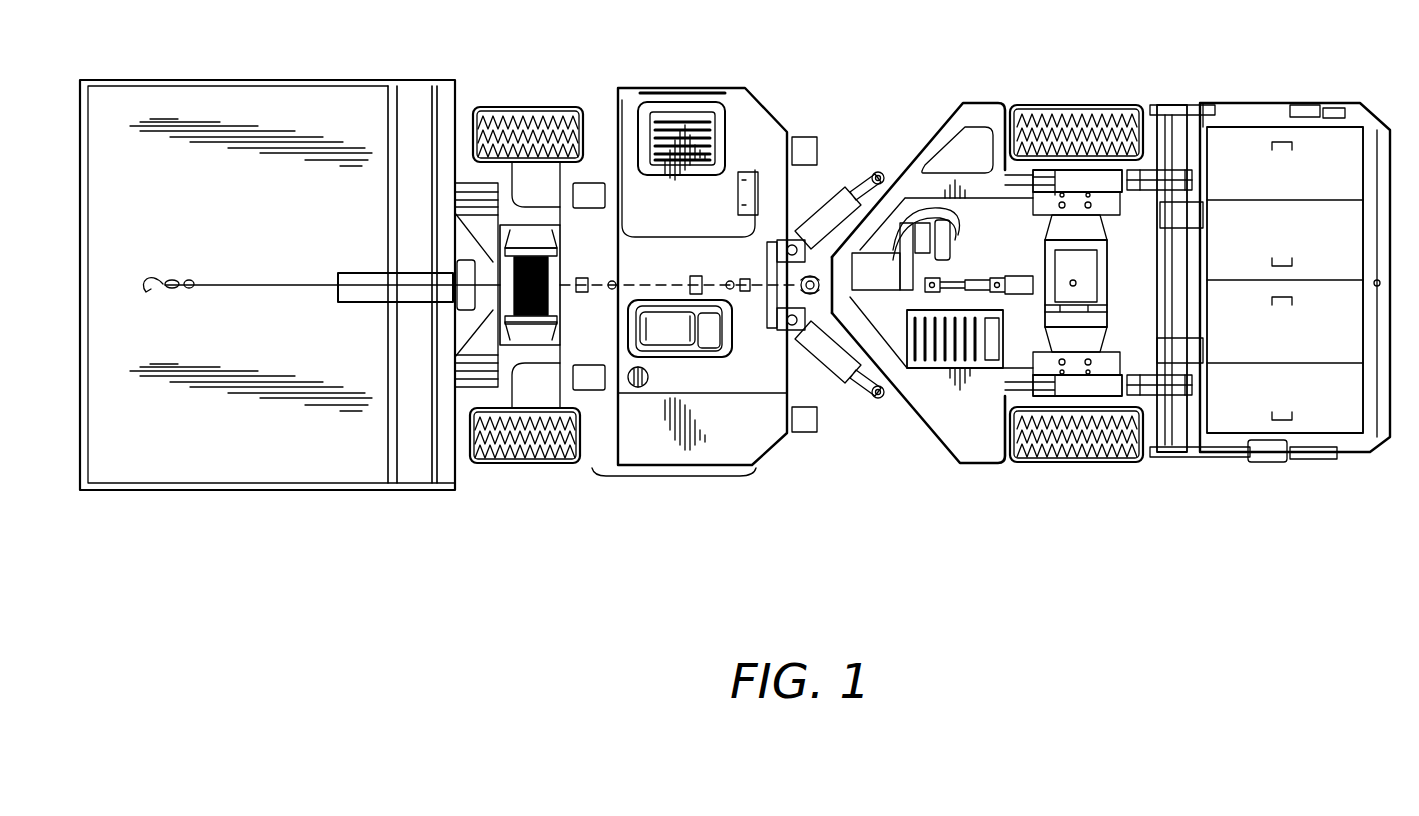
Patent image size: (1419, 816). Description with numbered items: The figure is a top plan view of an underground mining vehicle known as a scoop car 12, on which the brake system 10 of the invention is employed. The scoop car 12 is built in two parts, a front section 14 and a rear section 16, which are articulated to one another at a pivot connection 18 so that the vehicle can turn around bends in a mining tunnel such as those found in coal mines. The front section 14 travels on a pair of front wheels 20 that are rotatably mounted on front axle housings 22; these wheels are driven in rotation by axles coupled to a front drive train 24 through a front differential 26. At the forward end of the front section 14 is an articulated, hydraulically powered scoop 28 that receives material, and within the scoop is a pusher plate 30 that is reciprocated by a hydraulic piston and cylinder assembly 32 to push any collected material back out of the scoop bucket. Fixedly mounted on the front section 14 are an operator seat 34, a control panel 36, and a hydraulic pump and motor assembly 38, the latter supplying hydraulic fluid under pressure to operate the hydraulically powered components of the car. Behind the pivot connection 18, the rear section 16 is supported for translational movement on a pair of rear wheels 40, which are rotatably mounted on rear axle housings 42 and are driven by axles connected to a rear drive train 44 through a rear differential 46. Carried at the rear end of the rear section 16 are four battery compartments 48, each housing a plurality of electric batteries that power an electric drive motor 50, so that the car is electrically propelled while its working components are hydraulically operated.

The brake system 10 is at (947, 261).
The underground mining car 12 is at (918, 78).
The front section 14 is at (625, 60).
The rear section 16 is at (1133, 56).
The pivot connection 18 is at (815, 302).
The front wheels 20 is at (505, 106).
The front axle housings 22 is at (530, 163).
The front drive train 24 is at (680, 270).
The front differential 26 is at (548, 232).
The scoop 28 is at (253, 83).
The pusher plate 30 is at (385, 104).
The hydraulic piston and cylinder assembly 32 is at (356, 300).
The operator seat 34 is at (735, 115).
The control panel 36 is at (760, 165).
The hydraulic pump and motor assembly 38 is at (690, 348).
The rear wheels 40 is at (1046, 105).
The rear axle housings 42 is at (1075, 165).
The rear drive train 44 is at (982, 270).
The rear differential 46 is at (1095, 275).
The battery compartments 48 is at (1253, 145).
The electric drive motor 50 is at (993, 355).